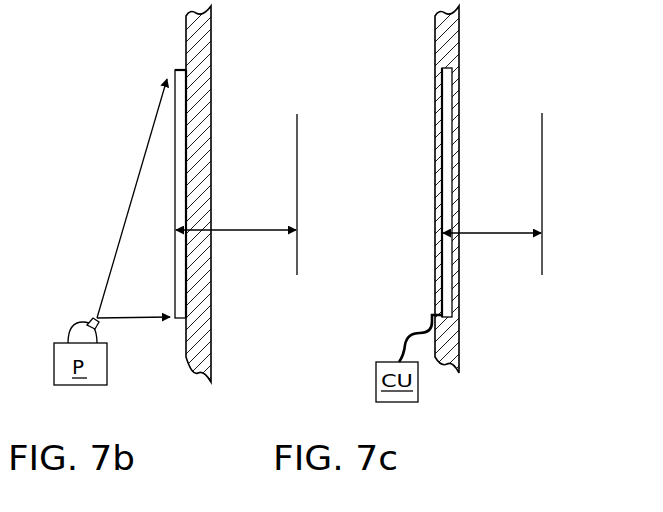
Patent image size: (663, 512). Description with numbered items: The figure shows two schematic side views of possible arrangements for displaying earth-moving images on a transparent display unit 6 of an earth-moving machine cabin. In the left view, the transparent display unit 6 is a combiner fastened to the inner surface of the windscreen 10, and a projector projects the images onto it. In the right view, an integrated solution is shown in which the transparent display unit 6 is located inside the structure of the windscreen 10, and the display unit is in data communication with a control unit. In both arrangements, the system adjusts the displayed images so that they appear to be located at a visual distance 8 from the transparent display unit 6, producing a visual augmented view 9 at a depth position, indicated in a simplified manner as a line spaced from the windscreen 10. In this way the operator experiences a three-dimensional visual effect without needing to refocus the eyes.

In FIG. 7b, the transparent display unit 6 is at (184, 69).
In FIG. 7c, the transparent display unit 6 is at (446, 137).
In FIG. 7b, the visual distance 8 is at (236, 217).
In FIG. 7c, the visual distance 8 is at (492, 220).
In FIG. 7b, the visual augmented view 9 is at (296, 143).
In FIG. 7c, the visual augmented view 9 is at (541, 150).
In FIG. 7b, the windscreen 10 is at (200, 33).
In FIG. 7c, the windscreen 10 is at (455, 25).